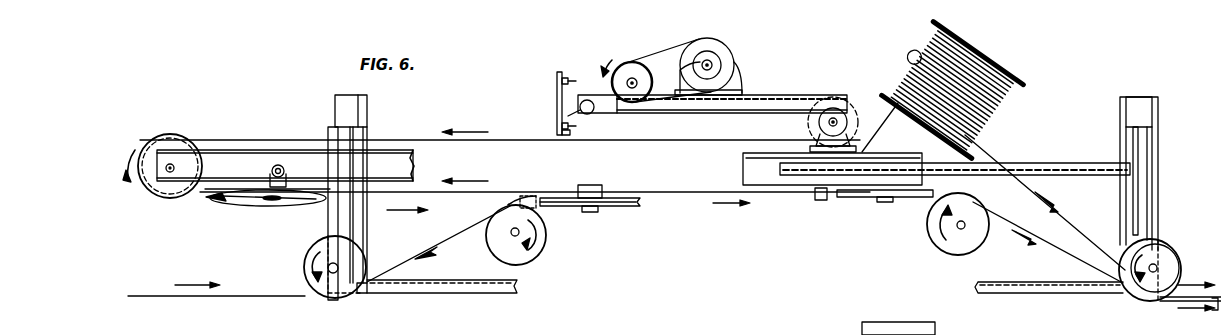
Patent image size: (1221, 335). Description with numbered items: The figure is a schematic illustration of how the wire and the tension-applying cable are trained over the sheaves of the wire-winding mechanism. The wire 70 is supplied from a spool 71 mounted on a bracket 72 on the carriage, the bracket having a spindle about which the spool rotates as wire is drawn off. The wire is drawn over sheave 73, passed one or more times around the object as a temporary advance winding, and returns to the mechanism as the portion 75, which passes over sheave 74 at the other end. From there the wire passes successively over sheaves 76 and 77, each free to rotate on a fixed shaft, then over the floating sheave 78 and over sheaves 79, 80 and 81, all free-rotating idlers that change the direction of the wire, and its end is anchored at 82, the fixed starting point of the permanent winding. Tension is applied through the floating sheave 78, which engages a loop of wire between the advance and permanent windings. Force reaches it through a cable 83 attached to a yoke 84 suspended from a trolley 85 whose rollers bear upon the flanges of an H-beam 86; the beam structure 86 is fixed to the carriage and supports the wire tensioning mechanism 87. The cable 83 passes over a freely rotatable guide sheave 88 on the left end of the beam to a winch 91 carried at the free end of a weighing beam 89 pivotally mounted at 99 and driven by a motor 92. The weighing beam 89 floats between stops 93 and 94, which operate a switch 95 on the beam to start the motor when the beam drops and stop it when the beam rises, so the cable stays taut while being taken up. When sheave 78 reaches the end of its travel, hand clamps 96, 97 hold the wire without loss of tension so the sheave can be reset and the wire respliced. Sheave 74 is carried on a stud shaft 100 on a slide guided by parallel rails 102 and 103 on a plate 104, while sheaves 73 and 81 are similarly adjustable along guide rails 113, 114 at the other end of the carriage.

The wire 70 is at (1072, 228).
The spool 71 is at (1017, 82).
The bracket 72 is at (892, 130).
The sheave 73 is at (1167, 262).
The sheave 74 is at (308, 256).
The portion of the advance winding 75 is at (268, 297).
The sheave 76 is at (541, 251).
The sheave 77 is at (620, 207).
The floating sheave 78 is at (302, 201).
The sheave 79 is at (849, 199).
The sheave 80 is at (946, 250).
The sheave 81 is at (1126, 258).
The anchor 82 is at (1216, 306).
The cable 83 is at (246, 140).
The yoke 84 is at (226, 203).
The trolley 85 is at (290, 178).
The H-beam 86 is at (416, 163).
The wire tensioning mechanism 87 is at (742, 72).
The guide sheave 88 is at (154, 190).
The weighing beam 89 is at (771, 97).
The winch 91 is at (634, 64).
The motor 92 is at (710, 42).
The stop 93 is at (570, 73).
The stop 94 is at (570, 136).
The switch 95 is at (594, 113).
The hand clamp 96 is at (531, 196).
The hand clamp 97 is at (814, 200).
The pivot 99 is at (820, 124).
The stud shaft 100 is at (340, 268).
The rail 102 is at (330, 127).
The rail 103 is at (366, 224).
The plate 104 is at (352, 110).
The guide rail 113 is at (1132, 150).
The guide rail 114 is at (1156, 162).